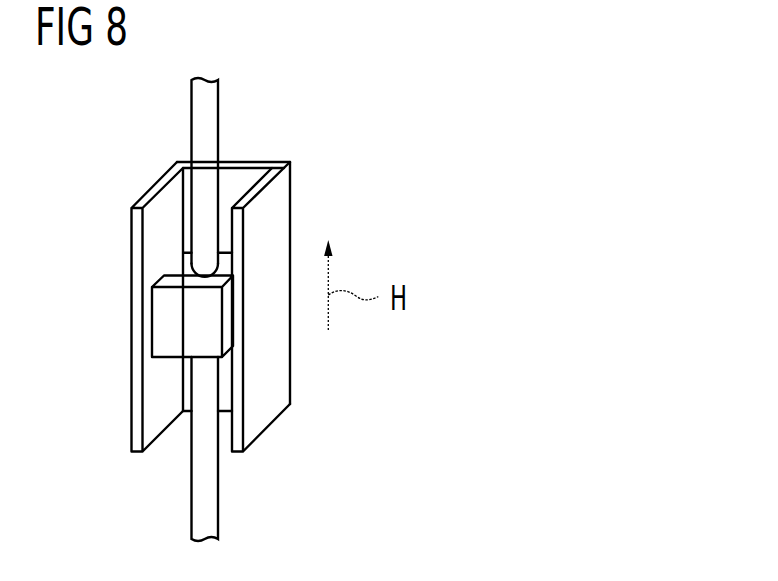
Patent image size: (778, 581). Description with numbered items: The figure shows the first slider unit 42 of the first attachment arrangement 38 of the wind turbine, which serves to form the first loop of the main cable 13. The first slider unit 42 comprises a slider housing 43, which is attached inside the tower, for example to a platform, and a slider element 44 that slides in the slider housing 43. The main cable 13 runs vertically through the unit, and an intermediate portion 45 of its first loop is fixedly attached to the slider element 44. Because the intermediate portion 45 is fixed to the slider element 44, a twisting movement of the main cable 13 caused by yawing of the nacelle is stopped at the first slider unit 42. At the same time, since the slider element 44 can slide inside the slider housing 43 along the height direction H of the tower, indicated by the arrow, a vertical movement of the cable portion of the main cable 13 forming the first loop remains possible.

The main cable 13 is at (203, 113).
The first attachment arrangement 38 is at (277, 269).
The first slider unit 42 is at (277, 269).
The slider housing 43 is at (275, 377).
The slider element 44 is at (162, 318).
The intermediate portion 45 is at (200, 260).